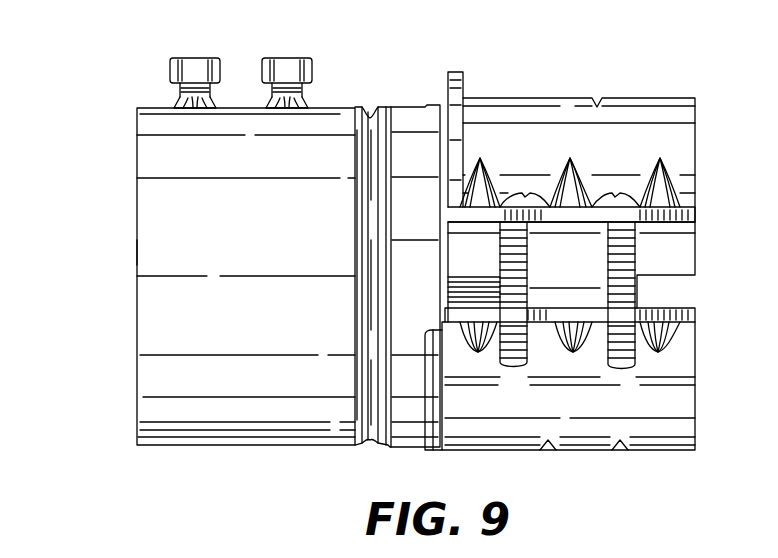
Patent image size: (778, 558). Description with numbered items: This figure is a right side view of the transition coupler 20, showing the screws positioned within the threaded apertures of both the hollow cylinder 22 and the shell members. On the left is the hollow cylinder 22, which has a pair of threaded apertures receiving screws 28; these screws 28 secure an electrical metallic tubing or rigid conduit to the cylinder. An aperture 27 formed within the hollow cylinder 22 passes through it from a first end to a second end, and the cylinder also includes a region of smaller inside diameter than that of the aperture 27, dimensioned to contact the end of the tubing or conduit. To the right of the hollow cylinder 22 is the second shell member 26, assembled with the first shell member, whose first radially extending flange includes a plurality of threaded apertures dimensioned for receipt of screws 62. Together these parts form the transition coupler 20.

The transition coupler 20 is at (421, 39).
The hollow cylinder 22 is at (168, 155).
The second shell member 26 is at (631, 137).
The aperture 27 is at (120, 253).
The screws 28 is at (284, 80).
The screws 62 is at (607, 200).